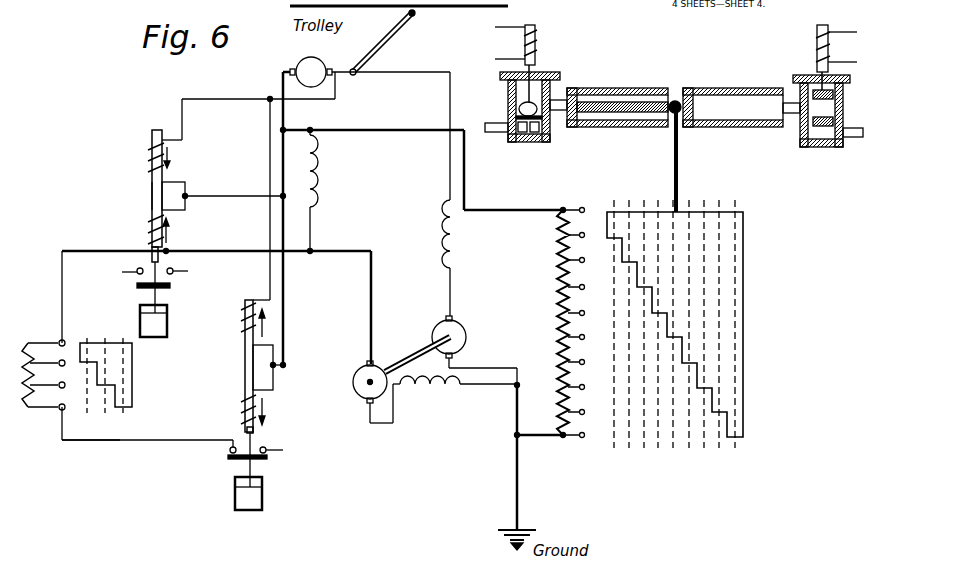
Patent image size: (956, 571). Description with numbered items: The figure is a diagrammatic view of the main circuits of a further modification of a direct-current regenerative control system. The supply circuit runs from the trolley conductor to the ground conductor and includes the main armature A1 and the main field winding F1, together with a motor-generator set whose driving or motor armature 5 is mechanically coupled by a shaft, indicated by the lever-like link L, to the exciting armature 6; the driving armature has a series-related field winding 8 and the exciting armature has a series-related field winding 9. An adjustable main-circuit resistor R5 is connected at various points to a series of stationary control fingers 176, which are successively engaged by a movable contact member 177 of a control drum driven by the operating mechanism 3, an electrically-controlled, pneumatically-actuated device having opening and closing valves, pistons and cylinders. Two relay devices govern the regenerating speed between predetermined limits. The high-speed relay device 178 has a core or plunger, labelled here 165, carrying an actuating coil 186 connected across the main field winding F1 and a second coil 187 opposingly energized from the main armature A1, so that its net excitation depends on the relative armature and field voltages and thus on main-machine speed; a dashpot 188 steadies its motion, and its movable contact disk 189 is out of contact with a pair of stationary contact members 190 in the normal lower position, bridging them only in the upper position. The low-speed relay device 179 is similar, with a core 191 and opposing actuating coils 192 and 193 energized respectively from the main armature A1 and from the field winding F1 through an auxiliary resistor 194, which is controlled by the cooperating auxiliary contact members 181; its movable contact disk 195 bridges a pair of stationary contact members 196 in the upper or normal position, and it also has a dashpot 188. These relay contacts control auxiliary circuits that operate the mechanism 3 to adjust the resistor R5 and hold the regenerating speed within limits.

The operating mechanism 3 is at (687, 74).
The driving or motor armature 5 is at (440, 322).
The generating or exciting armature 6 is at (358, 368).
The series-related field winding 8 is at (440, 242).
The series-related field winding 9 is at (450, 391).
The switch blade 165 is at (153, 196).
The stationary control fingers 176 is at (580, 310).
The movable contact member 177 is at (745, 252).
The high-speed relay device 178 is at (127, 197).
The low-speed relay device 179 is at (223, 390).
The auxiliary contact members 181 is at (50, 325).
The actuating coil 186 is at (150, 231).
The second coil 187 is at (137, 188).
The dashpot 188 is at (140, 316).
The movable contact member or disk 189 is at (170, 288).
The stationary contact members 190 is at (137, 269).
The core 191 is at (253, 366).
The actuating coil 192 is at (245, 327).
The actuating coil 193 is at (245, 411).
The auxiliary resistor 194 is at (67, 436).
The movable contact disk 195 is at (267, 459).
The stationary contact members 196 is at (230, 450).
The main armature A1 is at (311, 65).
The main field winding F1 is at (323, 190).
The lever L is at (410, 352).
The adjustable main-circuit resistor R5 is at (541, 322).